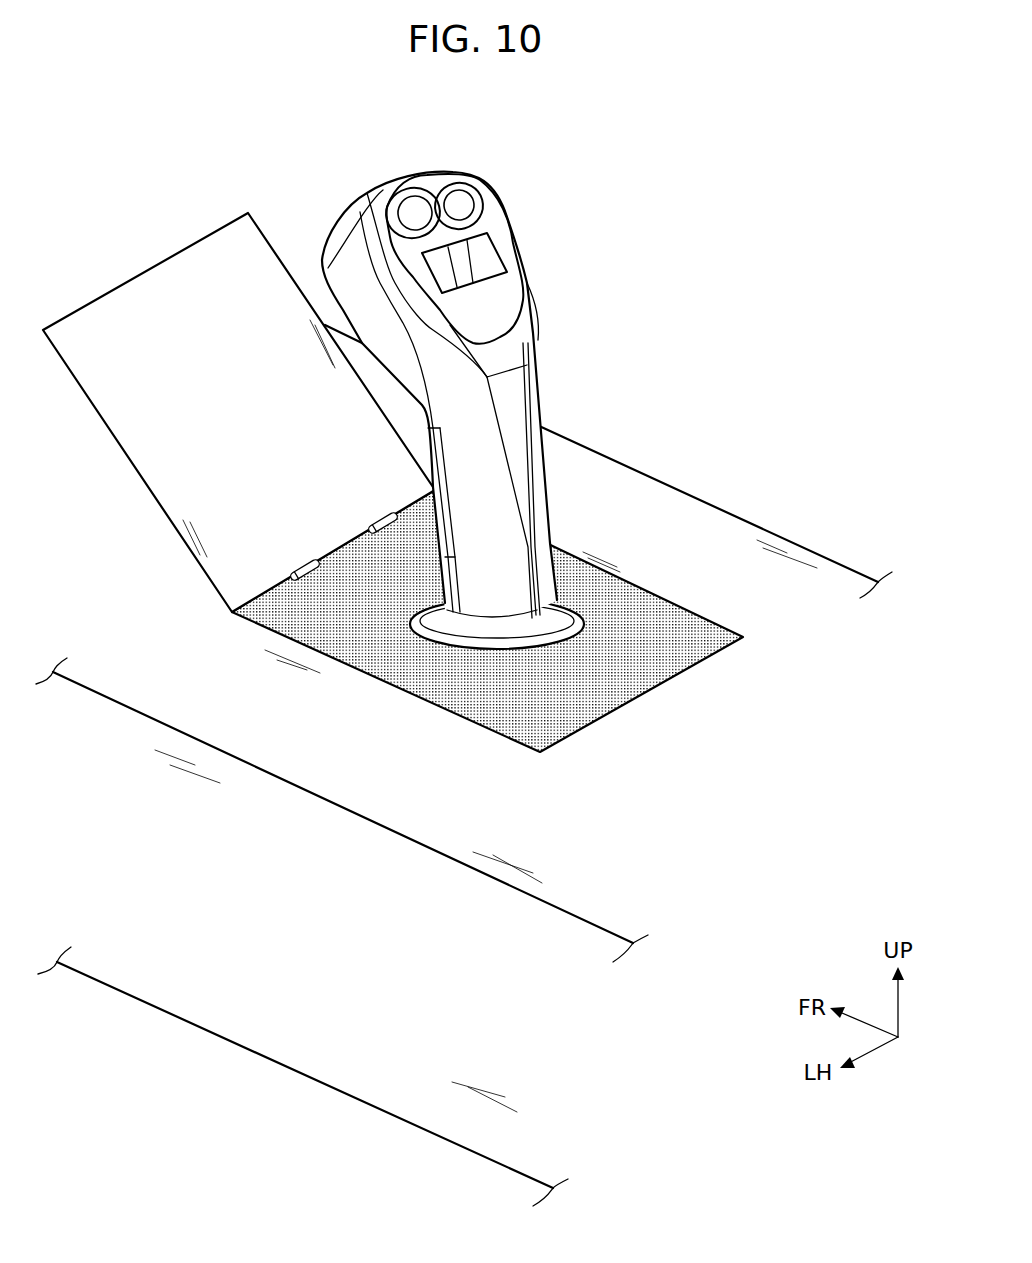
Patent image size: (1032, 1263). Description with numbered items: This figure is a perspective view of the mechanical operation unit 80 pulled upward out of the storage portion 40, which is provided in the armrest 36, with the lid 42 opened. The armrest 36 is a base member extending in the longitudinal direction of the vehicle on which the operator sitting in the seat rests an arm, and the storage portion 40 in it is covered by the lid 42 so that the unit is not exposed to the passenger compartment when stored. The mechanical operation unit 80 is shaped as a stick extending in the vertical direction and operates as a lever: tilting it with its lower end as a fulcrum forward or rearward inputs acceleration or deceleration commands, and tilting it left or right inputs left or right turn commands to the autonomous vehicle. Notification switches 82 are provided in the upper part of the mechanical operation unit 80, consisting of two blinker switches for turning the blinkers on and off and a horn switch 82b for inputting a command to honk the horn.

The armrest 36 is at (733, 560).
The storage portion 40 is at (638, 640).
The lid 42 is at (193, 303).
The mechanical operation unit 80 is at (512, 389).
The notification switches 82 is at (533, 211).
The horn switch 82b is at (483, 257).